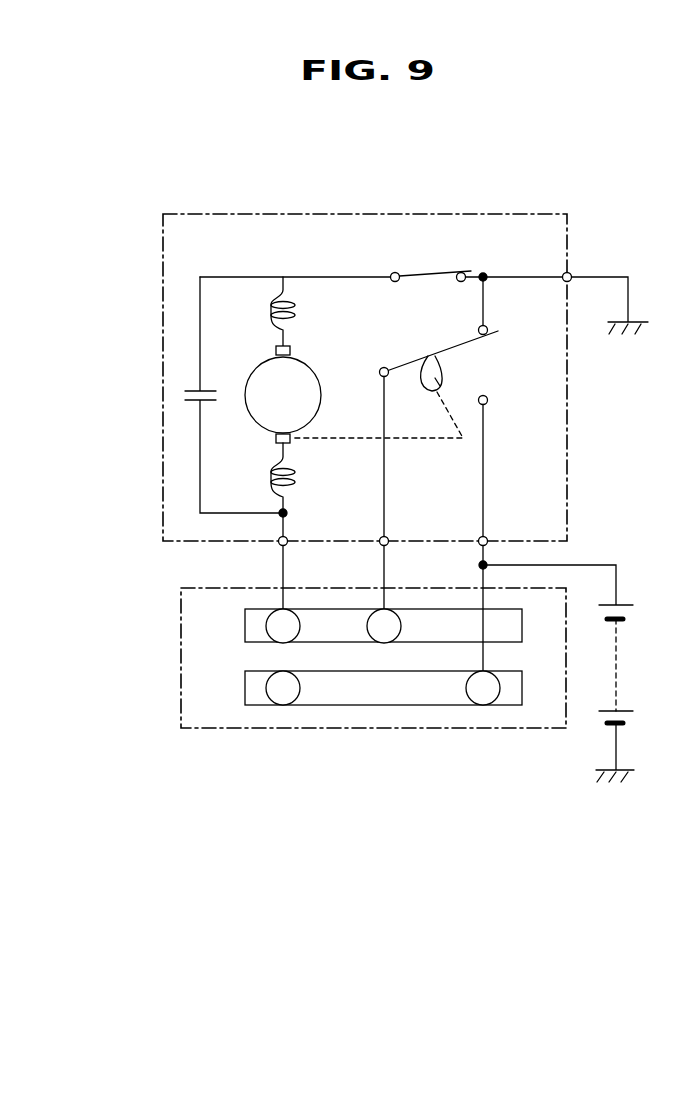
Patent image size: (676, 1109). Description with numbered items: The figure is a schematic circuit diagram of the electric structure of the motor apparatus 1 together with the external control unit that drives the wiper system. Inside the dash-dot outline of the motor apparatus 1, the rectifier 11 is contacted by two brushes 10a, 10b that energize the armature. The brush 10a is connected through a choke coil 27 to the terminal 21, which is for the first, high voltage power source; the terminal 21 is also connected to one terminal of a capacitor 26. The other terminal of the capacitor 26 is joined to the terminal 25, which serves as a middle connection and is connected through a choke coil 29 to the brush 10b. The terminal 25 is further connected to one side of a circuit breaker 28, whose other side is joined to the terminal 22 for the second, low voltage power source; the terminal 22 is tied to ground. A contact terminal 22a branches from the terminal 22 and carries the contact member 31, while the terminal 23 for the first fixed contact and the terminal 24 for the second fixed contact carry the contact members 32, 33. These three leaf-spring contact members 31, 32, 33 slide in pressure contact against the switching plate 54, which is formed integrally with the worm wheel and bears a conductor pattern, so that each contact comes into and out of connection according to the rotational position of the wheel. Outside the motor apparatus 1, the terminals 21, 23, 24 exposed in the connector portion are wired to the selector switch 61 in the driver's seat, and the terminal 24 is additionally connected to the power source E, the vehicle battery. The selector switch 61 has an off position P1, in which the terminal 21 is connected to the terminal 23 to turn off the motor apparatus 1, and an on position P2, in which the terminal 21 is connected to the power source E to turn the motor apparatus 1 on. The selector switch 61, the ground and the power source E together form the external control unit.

The motor apparatus 1 is at (330, 214).
The brush 10a is at (291, 443).
The brush 10b is at (292, 350).
The rectifier 11 is at (315, 365).
The terminal 21 is at (290, 525).
The terminal 22 is at (520, 276).
The contact terminal 22a is at (485, 290).
The terminal 23 is at (386, 500).
The terminal 24 is at (485, 500).
The terminal 25 is at (243, 276).
The capacitor 26 is at (205, 388).
The choke coil 27 is at (272, 472).
The circuit breaker 28 is at (427, 272).
The choke coil 29 is at (272, 304).
The contact member 31 is at (482, 312).
The contact member 32 is at (386, 415).
The contact member 33 is at (485, 445).
The switching plate 54 is at (462, 349).
The selector switch 61 is at (343, 697).
The power source E is at (625, 600).
The off position P1 is at (245, 626).
The on position P2 is at (245, 689).